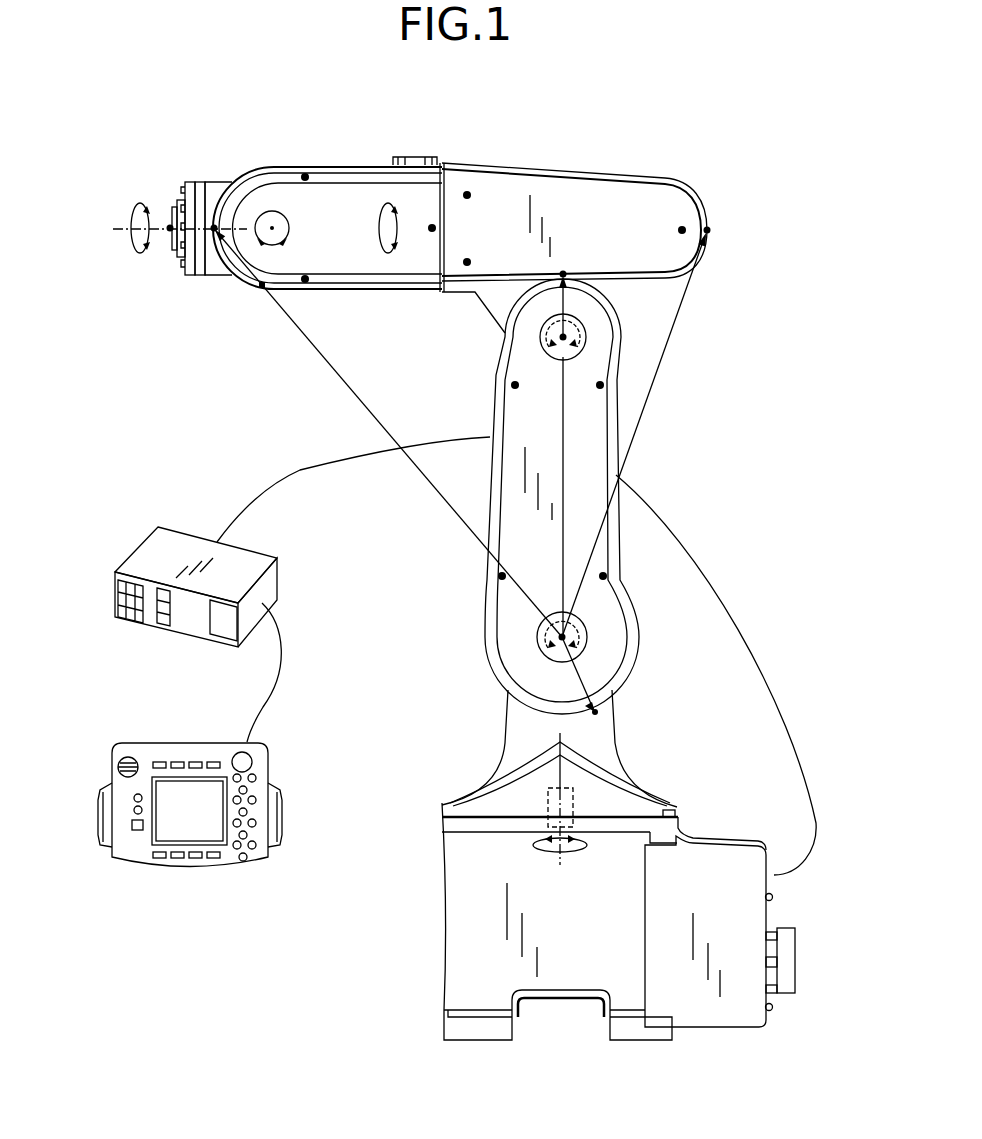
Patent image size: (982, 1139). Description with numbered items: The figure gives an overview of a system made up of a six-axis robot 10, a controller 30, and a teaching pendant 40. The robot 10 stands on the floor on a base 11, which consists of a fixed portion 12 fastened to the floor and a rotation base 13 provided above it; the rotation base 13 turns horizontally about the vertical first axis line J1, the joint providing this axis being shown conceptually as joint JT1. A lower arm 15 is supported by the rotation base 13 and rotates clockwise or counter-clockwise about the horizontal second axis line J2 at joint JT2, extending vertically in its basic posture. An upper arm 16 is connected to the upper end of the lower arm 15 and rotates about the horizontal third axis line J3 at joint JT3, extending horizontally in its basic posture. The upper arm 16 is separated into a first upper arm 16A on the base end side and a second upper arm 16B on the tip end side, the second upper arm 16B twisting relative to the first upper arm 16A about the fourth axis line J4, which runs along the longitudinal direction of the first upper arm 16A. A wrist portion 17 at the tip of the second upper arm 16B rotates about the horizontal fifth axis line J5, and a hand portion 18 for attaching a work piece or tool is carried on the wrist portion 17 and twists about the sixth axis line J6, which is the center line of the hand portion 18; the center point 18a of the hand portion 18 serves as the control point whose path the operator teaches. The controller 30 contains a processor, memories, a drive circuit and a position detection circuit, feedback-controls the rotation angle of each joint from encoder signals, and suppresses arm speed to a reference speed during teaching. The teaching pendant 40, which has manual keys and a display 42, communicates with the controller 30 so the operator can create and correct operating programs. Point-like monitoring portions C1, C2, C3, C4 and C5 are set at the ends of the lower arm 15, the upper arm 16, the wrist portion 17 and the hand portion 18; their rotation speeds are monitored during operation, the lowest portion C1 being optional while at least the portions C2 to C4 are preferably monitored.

The robot 10 is at (448, 556).
The base 11 is at (442, 965).
The fixed portion 12 is at (442, 855).
The rotation base 13 is at (490, 763).
The lower arm 15 is at (492, 466).
The upper arm 16 is at (460, 202).
The first upper arm 16A is at (455, 163).
The second upper arm 16B is at (382, 163).
The wrist portion 17 is at (212, 182).
The hand portion 18 is at (190, 182).
The center point 18a is at (170, 230).
The controller 30 is at (267, 550).
The teaching pendant 40 is at (190, 800).
The display 42 is at (165, 832).
The first axis line J1 is at (560, 840).
The second axis line J2 is at (566, 637).
The third axis line J3 is at (567, 338).
The fourth axis line J4 is at (436, 229).
The fifth axis line J5 is at (272, 241).
The sixth axis line J6 is at (163, 228).
The joint JT1 is at (573, 807).
The joint JT2 is at (582, 618).
The joint JT3 is at (583, 320).
The monitoring portion C1 is at (585, 690).
The monitoring portion C2 is at (575, 290).
The monitoring portion C3 is at (724, 231).
The monitoring portion C4 is at (232, 218).
The monitoring portion C5 is at (162, 221).